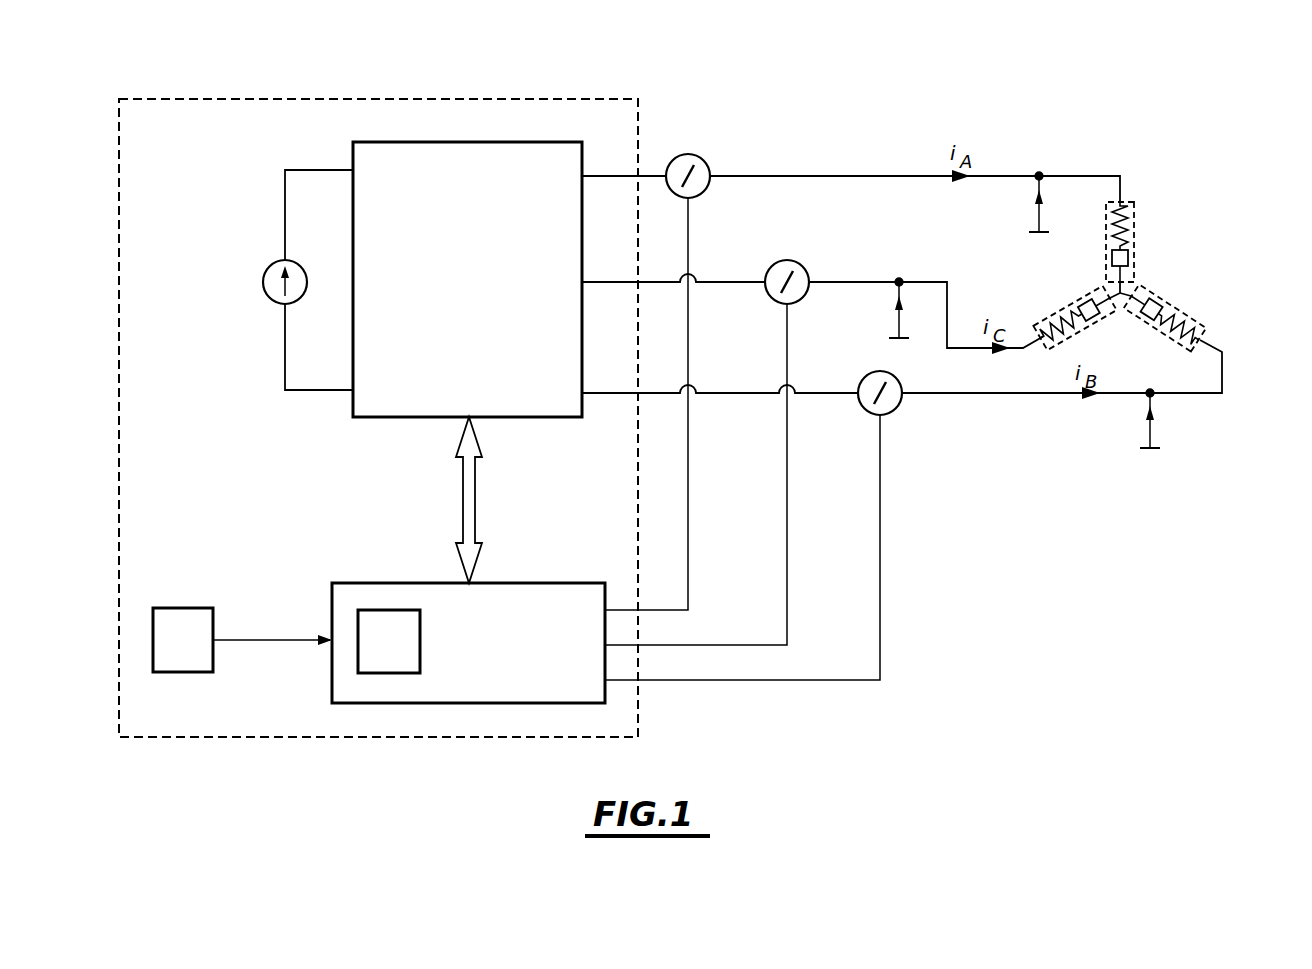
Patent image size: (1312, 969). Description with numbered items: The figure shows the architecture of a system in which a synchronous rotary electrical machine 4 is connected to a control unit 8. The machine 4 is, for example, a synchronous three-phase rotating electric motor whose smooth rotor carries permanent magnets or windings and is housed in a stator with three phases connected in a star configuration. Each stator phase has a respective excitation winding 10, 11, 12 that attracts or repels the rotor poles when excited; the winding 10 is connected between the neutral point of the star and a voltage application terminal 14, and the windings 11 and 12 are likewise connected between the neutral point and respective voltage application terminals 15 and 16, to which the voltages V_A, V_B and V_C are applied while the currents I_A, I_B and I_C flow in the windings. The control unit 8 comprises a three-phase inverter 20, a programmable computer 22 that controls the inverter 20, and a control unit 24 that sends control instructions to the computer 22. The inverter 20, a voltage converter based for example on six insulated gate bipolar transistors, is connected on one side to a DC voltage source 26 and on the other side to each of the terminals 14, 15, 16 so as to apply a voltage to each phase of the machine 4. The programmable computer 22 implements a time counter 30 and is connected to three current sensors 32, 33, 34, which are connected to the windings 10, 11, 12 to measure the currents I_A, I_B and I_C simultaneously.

The synchronous rotary electrical machine 4 is at (1140, 257).
The control unit 8 is at (230, 98).
The excitation winding 10 is at (1142, 206).
The excitation winding 11 is at (1203, 306).
The excitation winding 12 is at (1052, 306).
The voltage application terminal 14 is at (1040, 172).
The voltage application terminal 15 is at (1150, 390).
The voltage application terminal 16 is at (900, 280).
The three-phase inverter 20 is at (467, 279).
The programmable computer 22 is at (468, 643).
The control unit 24 is at (242, 640).
The DC voltage source 26 is at (269, 270).
The time counter 30 is at (389, 641).
The current sensor 32 is at (703, 162).
The current sensor 33 is at (897, 408).
The current sensor 34 is at (803, 268).